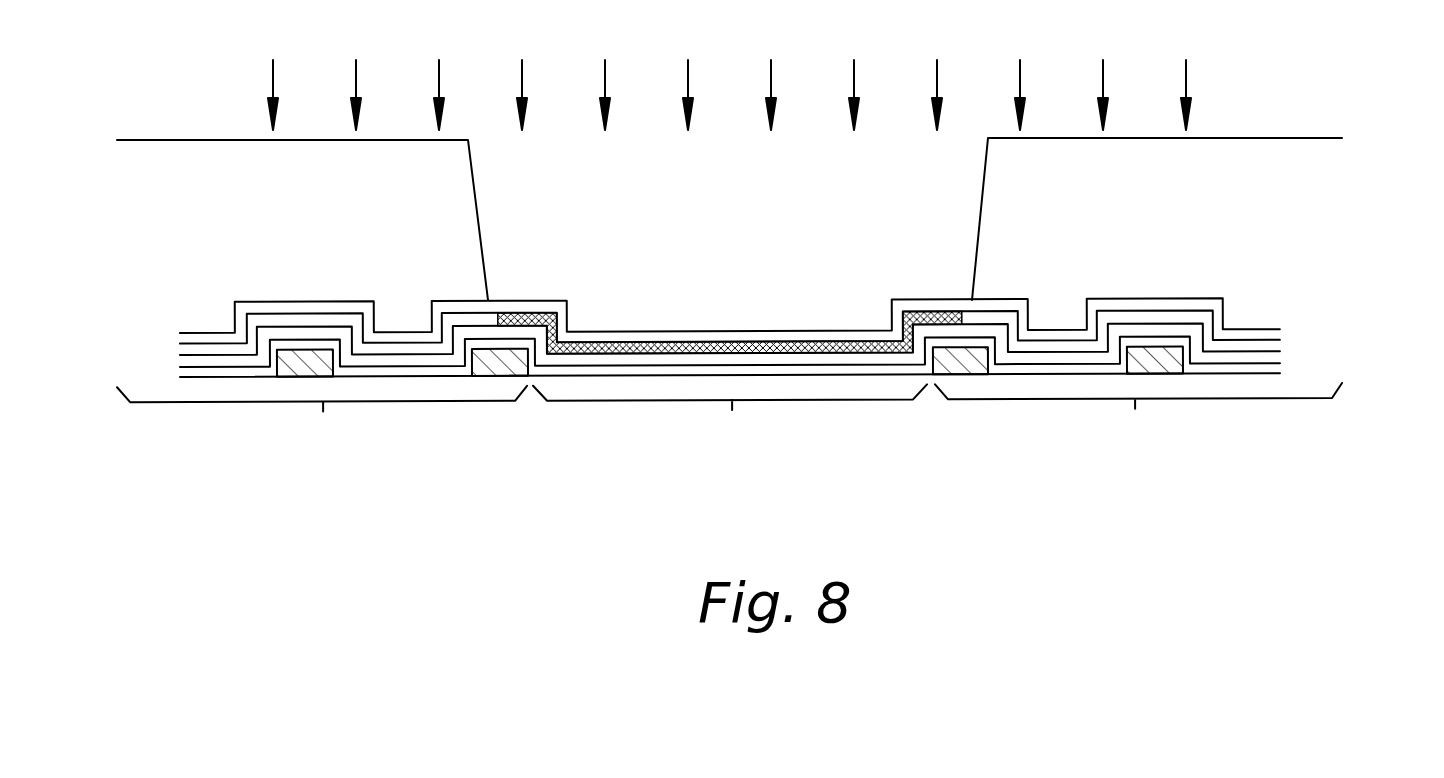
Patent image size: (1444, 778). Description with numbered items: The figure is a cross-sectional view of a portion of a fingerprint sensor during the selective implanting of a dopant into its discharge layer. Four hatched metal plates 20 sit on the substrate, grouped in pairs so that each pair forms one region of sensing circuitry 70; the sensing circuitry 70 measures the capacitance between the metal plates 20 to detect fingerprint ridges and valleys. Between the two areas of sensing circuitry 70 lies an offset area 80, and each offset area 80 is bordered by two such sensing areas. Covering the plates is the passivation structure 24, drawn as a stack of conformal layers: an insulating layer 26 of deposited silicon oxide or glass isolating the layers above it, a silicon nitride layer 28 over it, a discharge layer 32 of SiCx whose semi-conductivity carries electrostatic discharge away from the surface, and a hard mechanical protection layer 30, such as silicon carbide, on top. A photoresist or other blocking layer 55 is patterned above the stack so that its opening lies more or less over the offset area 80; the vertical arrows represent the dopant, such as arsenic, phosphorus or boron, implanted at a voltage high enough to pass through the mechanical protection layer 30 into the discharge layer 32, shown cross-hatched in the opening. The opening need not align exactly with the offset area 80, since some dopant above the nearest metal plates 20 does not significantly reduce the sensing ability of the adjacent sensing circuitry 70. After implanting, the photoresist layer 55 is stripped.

The metal plates 20 is at (305, 356).
The passivation structure 24 is at (801, 315).
The insulating layer 26 is at (1277, 371).
The silicon nitride layer 28 is at (1272, 356).
The mechanical protection layer 30 is at (1238, 333).
The discharge layer 32 is at (1255, 348).
The photoresist layer 55 is at (1199, 211).
The sensing circuitry 70 is at (729, 416).
The offset area 80 is at (730, 416).